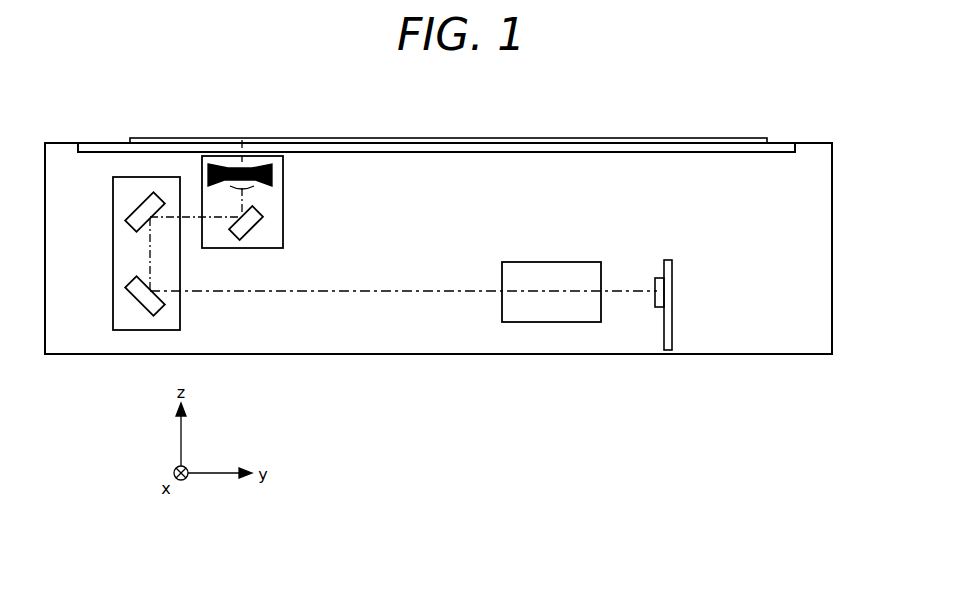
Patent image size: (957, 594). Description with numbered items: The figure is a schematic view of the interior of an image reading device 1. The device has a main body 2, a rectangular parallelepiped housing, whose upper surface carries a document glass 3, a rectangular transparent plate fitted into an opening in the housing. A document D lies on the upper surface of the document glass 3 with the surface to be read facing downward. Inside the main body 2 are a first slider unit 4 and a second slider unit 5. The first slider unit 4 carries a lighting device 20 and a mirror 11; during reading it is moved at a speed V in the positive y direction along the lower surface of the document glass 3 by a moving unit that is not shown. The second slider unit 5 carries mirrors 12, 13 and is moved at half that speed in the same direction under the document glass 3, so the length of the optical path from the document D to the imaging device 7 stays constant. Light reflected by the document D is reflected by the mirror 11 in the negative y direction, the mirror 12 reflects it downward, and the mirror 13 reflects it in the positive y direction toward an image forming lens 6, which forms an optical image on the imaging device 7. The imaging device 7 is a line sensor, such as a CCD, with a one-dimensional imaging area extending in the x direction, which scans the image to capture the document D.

The image reading device 1 is at (319, 68).
The main body 2 is at (805, 348).
The document glass 3 is at (784, 150).
The document D is at (729, 139).
The first slider unit 4 is at (273, 235).
The second slider unit 5 is at (172, 320).
The image forming lens 6 is at (525, 272).
The imaging device 7 is at (655, 281).
The mirror 11 is at (252, 231).
The mirror 12 is at (140, 209).
The mirror 13 is at (143, 299).
The lighting device 20 is at (228, 162).